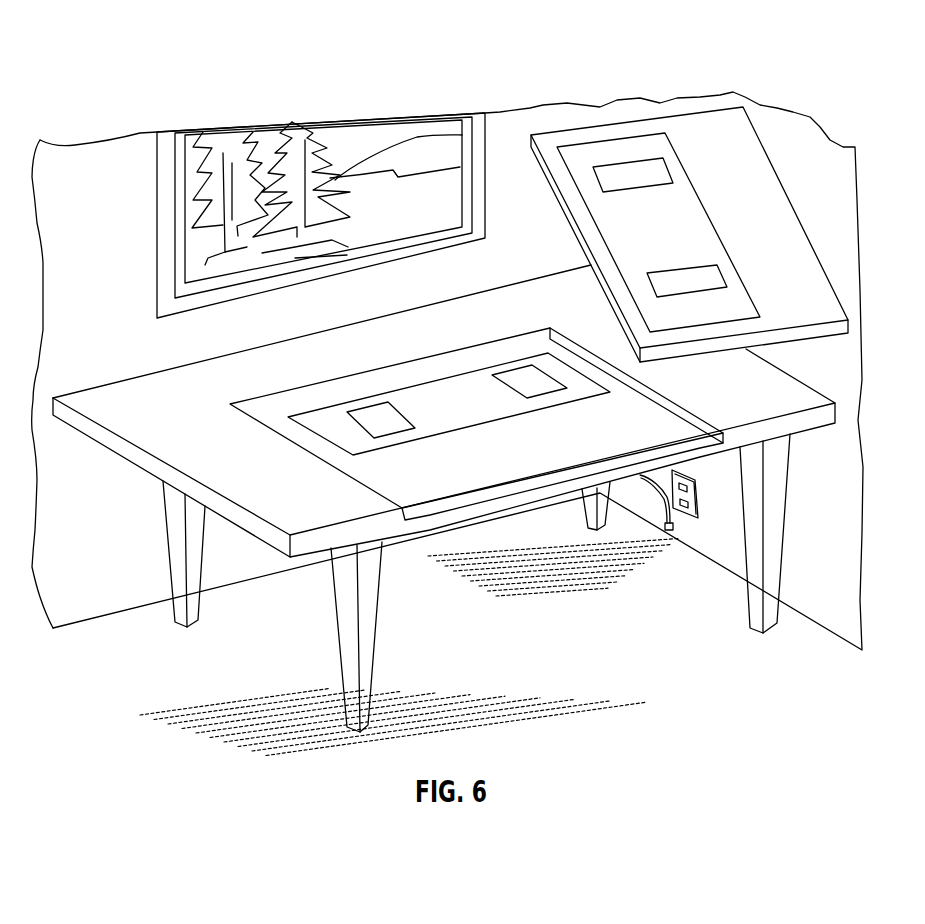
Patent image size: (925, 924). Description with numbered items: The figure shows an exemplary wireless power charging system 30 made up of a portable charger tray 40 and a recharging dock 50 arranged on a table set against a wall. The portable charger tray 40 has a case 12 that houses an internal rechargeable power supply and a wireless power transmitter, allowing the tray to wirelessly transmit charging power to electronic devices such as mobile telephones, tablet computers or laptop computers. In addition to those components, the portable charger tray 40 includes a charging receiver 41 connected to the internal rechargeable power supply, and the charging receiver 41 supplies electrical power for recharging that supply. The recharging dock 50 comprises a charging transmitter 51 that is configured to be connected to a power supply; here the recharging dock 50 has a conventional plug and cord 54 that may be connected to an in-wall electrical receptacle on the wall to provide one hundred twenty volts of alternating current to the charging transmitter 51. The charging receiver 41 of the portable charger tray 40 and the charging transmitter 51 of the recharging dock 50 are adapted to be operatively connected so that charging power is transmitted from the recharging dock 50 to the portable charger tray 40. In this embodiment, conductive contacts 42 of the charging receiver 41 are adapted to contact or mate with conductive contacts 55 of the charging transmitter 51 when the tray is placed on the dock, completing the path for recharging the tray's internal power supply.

The case 12 is at (572, 233).
The wireless power charging system 30 is at (724, 46).
The portable charger tray 40 is at (705, 137).
The charging receiver 41 is at (692, 228).
The conductive contacts 42 is at (608, 173).
The recharging dock 50 is at (505, 462).
The charging transmitter 51 is at (438, 400).
The plug and cord 54 is at (663, 516).
The conductive contacts 55 is at (373, 413).